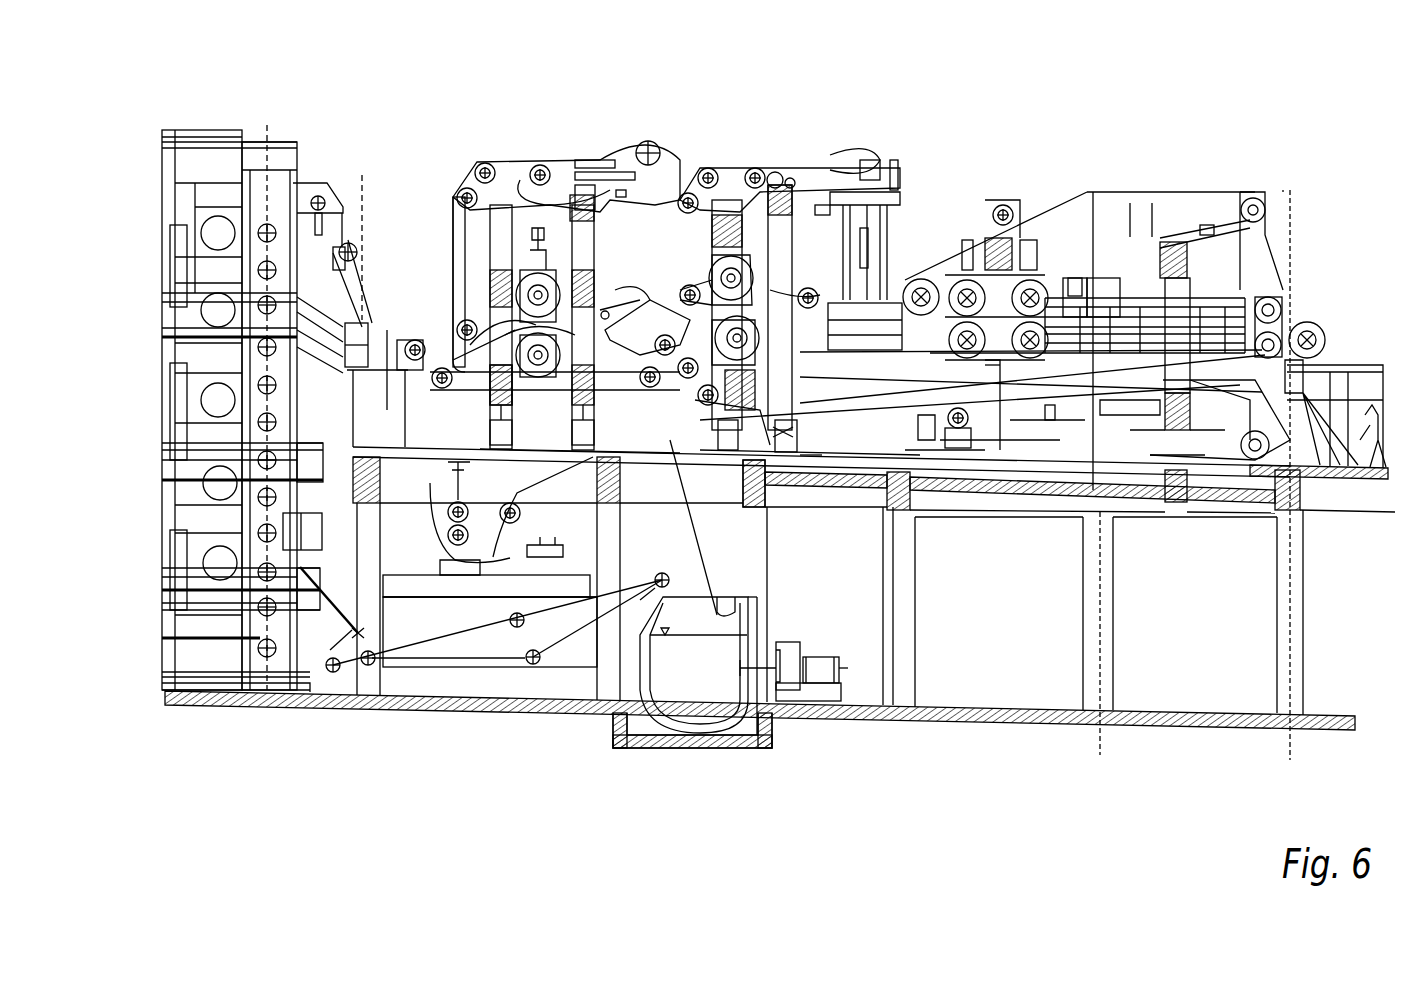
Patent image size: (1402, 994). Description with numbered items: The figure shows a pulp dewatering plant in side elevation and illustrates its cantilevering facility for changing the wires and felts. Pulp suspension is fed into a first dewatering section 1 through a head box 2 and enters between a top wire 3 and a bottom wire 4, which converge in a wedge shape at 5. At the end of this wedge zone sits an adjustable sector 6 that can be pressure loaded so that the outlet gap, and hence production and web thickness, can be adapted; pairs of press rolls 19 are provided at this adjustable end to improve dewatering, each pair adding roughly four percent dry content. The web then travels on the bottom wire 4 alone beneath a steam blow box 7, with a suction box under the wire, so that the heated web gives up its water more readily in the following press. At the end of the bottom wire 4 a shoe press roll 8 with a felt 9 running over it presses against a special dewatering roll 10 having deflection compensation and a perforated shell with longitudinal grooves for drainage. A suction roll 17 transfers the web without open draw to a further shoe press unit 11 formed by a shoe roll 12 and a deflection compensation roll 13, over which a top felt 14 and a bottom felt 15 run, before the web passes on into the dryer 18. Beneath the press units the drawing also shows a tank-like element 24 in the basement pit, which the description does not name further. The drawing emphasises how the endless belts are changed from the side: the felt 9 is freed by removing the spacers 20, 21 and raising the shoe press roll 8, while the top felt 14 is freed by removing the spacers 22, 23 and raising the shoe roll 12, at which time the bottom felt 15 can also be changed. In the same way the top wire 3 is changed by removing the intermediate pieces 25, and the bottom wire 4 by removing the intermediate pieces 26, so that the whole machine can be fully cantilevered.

The first dewatering section 1 is at (1284, 133).
The head box 2 is at (1310, 326).
The top wire 3 is at (1080, 190).
The bottom wire 4 is at (1053, 420).
The wedge-shaped convergence 5 is at (1178, 290).
The adjustable sector 6 is at (1073, 280).
The steam blow box 7 is at (920, 275).
The shoe press roll 8 is at (706, 276).
The felt 9 is at (740, 168).
The dewatering roll 10 is at (770, 400).
The shoe press unit 11 is at (556, 108).
The shoe roll 12 is at (524, 288).
The deflection compensation roll 13 is at (536, 372).
The top felt 14 is at (527, 165).
The bottom felt 15 is at (483, 373).
The suction roll 17 is at (642, 292).
The dryer 18 is at (247, 100).
The press roll 19 is at (1000, 215).
The spacer 20 is at (797, 182).
The spacer 21 is at (782, 385).
The spacer 22 is at (607, 190).
The spacer 23 is at (630, 443).
The tank 24 is at (645, 735).
The intermediate piece 25 is at (1282, 298).
The intermediate piece 26 is at (1176, 440).